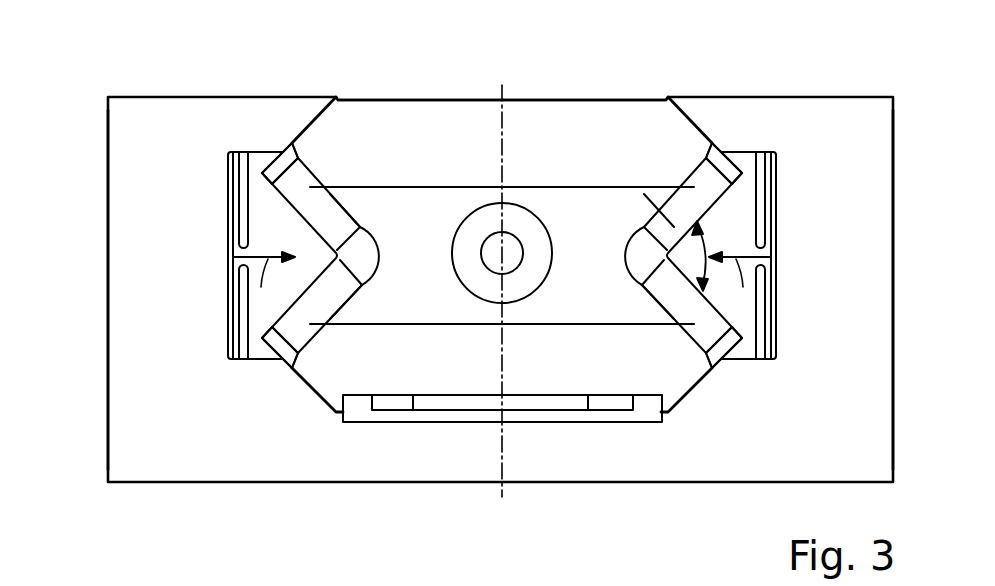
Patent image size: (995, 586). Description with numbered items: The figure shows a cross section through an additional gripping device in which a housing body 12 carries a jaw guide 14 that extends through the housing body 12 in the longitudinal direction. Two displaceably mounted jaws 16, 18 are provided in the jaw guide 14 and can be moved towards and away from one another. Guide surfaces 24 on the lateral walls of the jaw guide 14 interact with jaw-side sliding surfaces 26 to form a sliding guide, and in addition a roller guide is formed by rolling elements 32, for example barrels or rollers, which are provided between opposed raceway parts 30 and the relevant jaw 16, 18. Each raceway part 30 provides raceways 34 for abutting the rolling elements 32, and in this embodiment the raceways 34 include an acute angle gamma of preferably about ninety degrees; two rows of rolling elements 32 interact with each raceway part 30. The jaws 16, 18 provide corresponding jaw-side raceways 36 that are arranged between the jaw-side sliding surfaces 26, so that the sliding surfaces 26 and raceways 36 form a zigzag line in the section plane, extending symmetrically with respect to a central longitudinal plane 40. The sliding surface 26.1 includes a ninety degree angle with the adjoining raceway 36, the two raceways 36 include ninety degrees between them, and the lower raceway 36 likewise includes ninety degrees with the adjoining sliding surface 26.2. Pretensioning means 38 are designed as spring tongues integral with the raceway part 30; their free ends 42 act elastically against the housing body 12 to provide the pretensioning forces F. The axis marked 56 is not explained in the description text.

The housing body 12 is at (857, 115).
The jaw guide 14 is at (425, 413).
The jaw 16 is at (445, 122).
The jaw 18 is at (502, 255).
The guide surface 24 is at (308, 135).
The sliding surface 26 is at (318, 126).
The sliding surface 26.1 is at (685, 126).
The sliding surface 26.2 is at (686, 384).
The raceway part 30 is at (270, 237).
The rolling element 32 is at (327, 190).
The raceway 34 is at (282, 196).
The jaw-side raceway 36 is at (345, 207).
The pretensioning means 38 is at (238, 295).
The central longitudinal plane 40 is at (98, 262).
The free end 42 is at (228, 167).
The center axis 56 is at (504, 92).